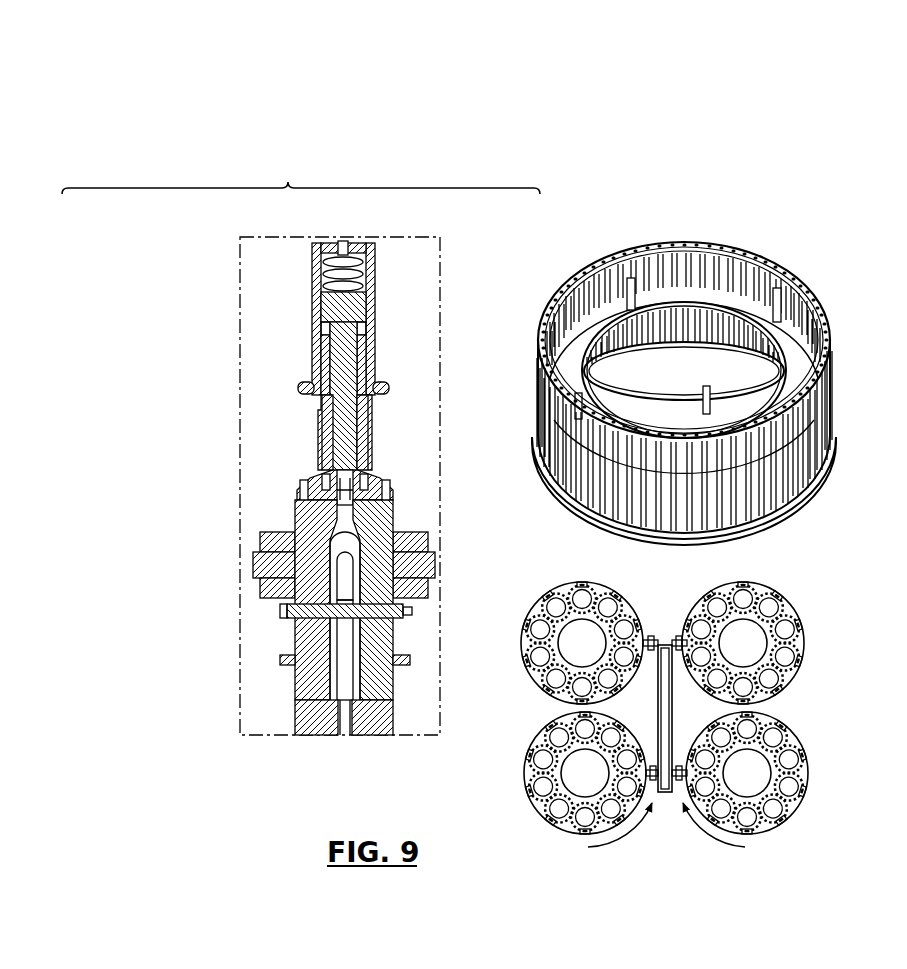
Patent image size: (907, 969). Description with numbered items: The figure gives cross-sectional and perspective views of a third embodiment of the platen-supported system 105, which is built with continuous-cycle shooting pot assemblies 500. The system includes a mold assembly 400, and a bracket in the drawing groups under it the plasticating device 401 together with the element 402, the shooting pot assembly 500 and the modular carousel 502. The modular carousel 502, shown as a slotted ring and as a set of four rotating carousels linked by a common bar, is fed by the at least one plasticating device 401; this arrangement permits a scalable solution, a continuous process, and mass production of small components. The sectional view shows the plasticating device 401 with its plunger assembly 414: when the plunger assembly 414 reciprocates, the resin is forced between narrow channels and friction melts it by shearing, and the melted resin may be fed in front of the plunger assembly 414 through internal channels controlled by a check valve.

The platen-supported system 105 is at (208, 74).
The mold assembly 400 is at (282, 146).
The plasticating device 401 is at (817, 727).
The die body 402 is at (128, 392).
The plunger assembly 414 is at (288, 330).
The continuous-cycle shooting pot assembly 500 is at (232, 533).
The modular carousel 502 is at (627, 223).